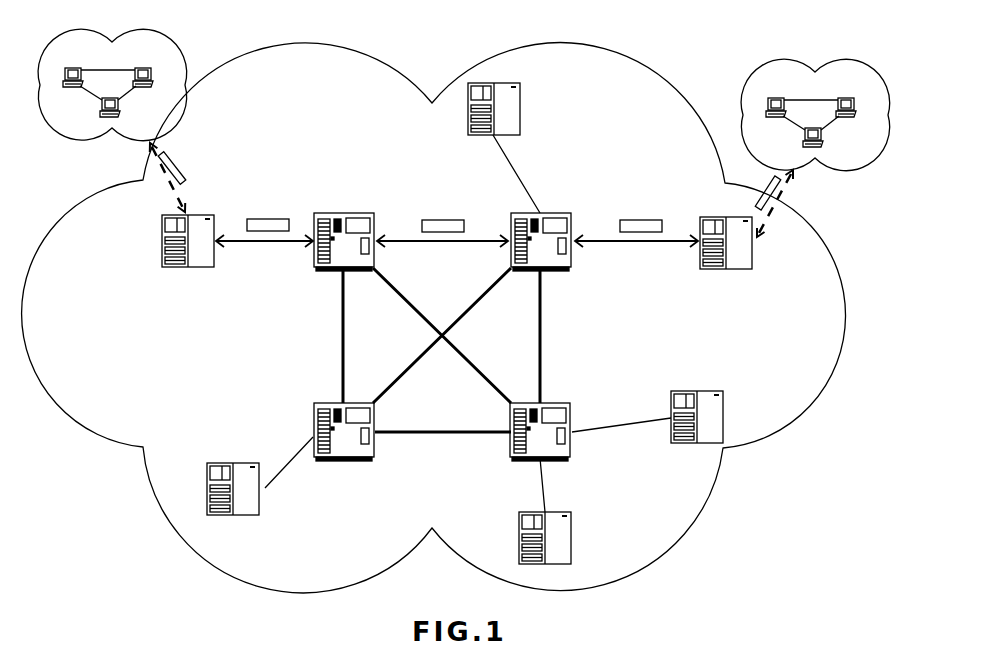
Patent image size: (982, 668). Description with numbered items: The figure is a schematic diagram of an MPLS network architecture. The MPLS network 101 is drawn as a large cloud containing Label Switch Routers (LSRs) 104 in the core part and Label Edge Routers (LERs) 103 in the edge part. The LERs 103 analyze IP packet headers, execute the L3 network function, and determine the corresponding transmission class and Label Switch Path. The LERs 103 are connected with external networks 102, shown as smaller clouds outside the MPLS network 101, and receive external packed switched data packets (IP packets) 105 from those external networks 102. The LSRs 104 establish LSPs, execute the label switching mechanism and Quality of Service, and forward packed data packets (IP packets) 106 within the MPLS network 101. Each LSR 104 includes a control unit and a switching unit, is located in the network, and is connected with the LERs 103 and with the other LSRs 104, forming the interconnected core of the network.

The MPLS network 101 is at (612, 55).
The external network 102 is at (136, 30).
The Label Edge Router (LER) 103 is at (204, 215).
The Label Switch Router (LSR) 104 is at (346, 213).
The external packed switched data packet (IP packet) 105 is at (180, 160).
The packed data packet (IP packet) 106 is at (270, 219).